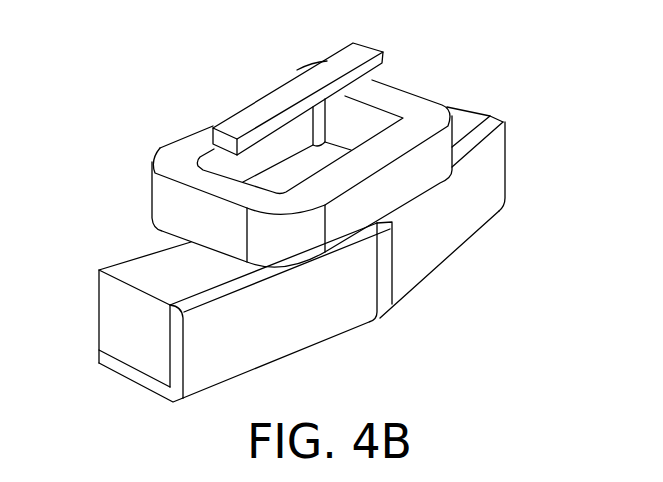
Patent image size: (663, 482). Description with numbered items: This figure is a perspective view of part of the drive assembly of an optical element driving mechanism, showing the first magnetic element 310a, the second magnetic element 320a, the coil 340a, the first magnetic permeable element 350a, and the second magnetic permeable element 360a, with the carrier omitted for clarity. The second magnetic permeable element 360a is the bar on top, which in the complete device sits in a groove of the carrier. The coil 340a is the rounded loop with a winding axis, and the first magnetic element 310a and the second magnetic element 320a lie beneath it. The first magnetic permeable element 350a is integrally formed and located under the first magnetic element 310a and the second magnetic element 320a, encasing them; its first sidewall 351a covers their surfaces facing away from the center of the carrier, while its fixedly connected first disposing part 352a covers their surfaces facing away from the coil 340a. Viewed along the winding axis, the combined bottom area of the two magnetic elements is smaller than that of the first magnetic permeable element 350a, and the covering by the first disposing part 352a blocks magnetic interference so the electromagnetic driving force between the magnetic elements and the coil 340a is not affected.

The first magnetic element 310a is at (153, 262).
The second magnetic element 320a is at (467, 122).
The coil 340a is at (392, 93).
The first magnetic permeable element 350a is at (498, 172).
The first sidewall 351a is at (440, 247).
The first disposing part 352a is at (127, 372).
The second magnetic permeable element 360a is at (292, 100).